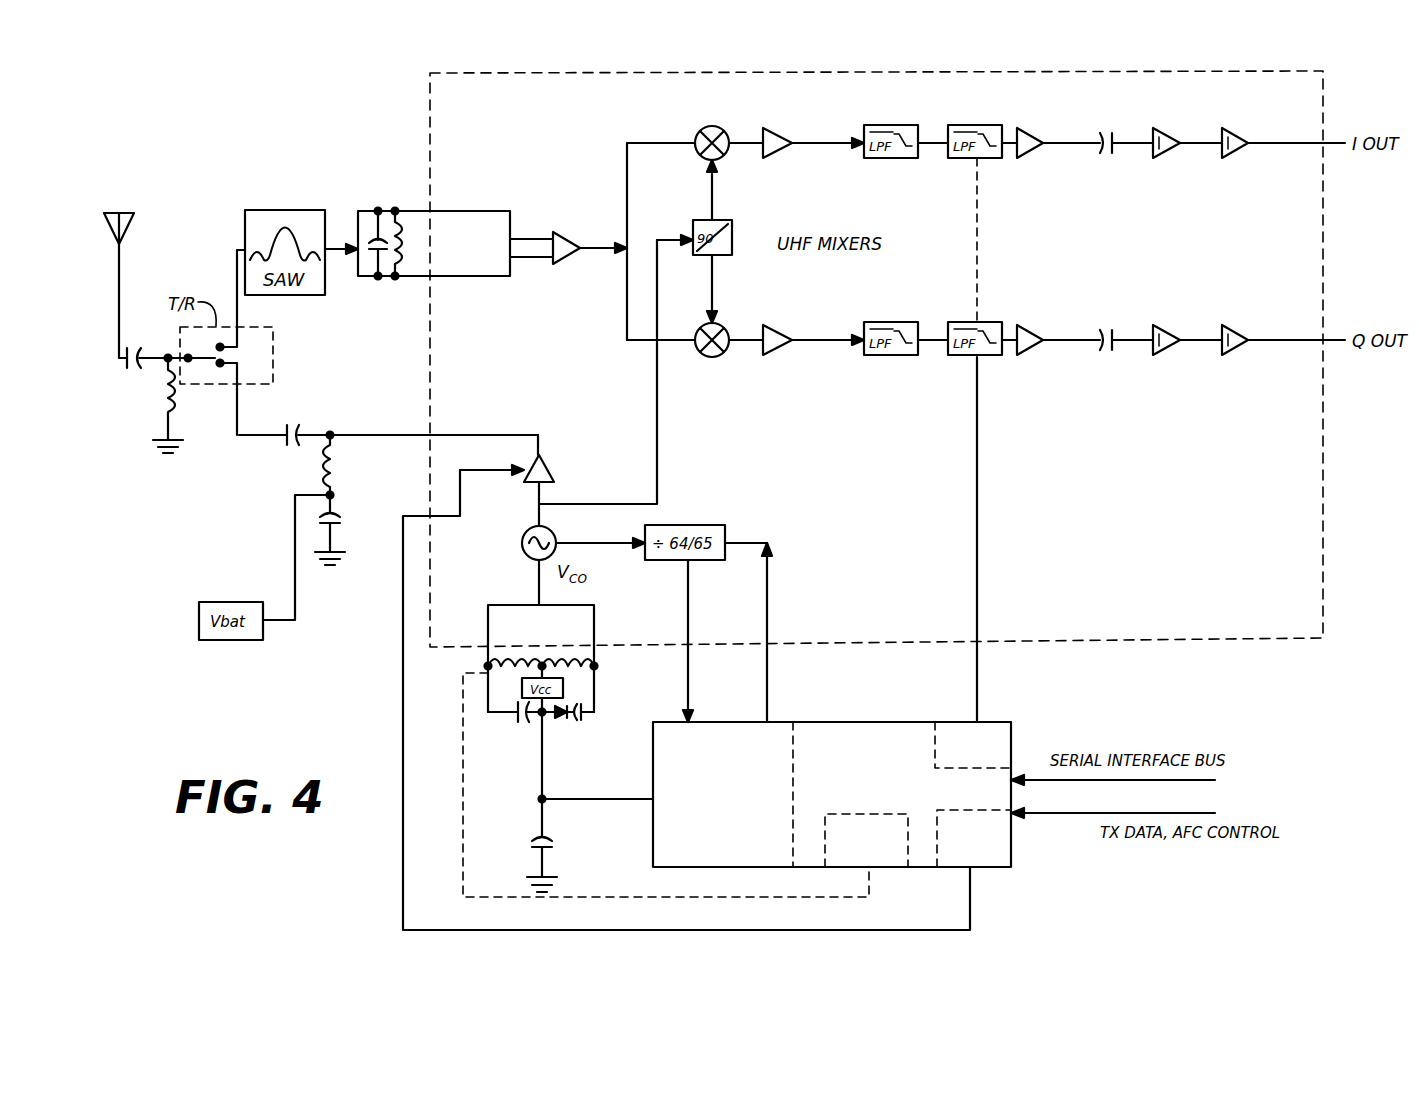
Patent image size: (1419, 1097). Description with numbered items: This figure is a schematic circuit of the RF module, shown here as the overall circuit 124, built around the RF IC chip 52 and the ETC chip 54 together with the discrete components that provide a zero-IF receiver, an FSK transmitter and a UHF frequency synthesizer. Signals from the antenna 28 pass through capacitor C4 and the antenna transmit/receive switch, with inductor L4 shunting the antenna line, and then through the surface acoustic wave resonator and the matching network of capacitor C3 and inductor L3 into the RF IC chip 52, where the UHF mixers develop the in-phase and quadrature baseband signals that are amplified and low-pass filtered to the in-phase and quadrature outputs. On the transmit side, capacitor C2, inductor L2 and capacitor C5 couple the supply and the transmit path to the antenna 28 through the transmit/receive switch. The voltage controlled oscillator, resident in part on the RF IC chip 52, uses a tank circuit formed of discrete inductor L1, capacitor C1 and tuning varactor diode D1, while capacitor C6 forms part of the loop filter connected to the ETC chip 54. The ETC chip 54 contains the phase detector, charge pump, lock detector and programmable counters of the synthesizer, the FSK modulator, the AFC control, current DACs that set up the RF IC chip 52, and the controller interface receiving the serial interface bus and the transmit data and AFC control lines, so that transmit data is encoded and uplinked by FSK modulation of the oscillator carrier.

The antenna 28 is at (132, 232).
The RF IC chip 52 is at (1156, 623).
The ETC chip 54 is at (889, 805).
The radio circuit 124 is at (1340, 717).
The loop filter capacitor C1 is at (515, 717).
The capacitor C2 is at (288, 398).
The capacitor C3 is at (365, 277).
The capacitor C4 is at (147, 320).
The capacitor C5 is at (336, 520).
The capacitor C6 is at (548, 848).
The inductor L1 is at (570, 670).
The inductor L2 is at (338, 465).
The inductor L3 is at (410, 255).
The inductor L4 is at (180, 390).
The tuning varactor diode D1 is at (563, 718).